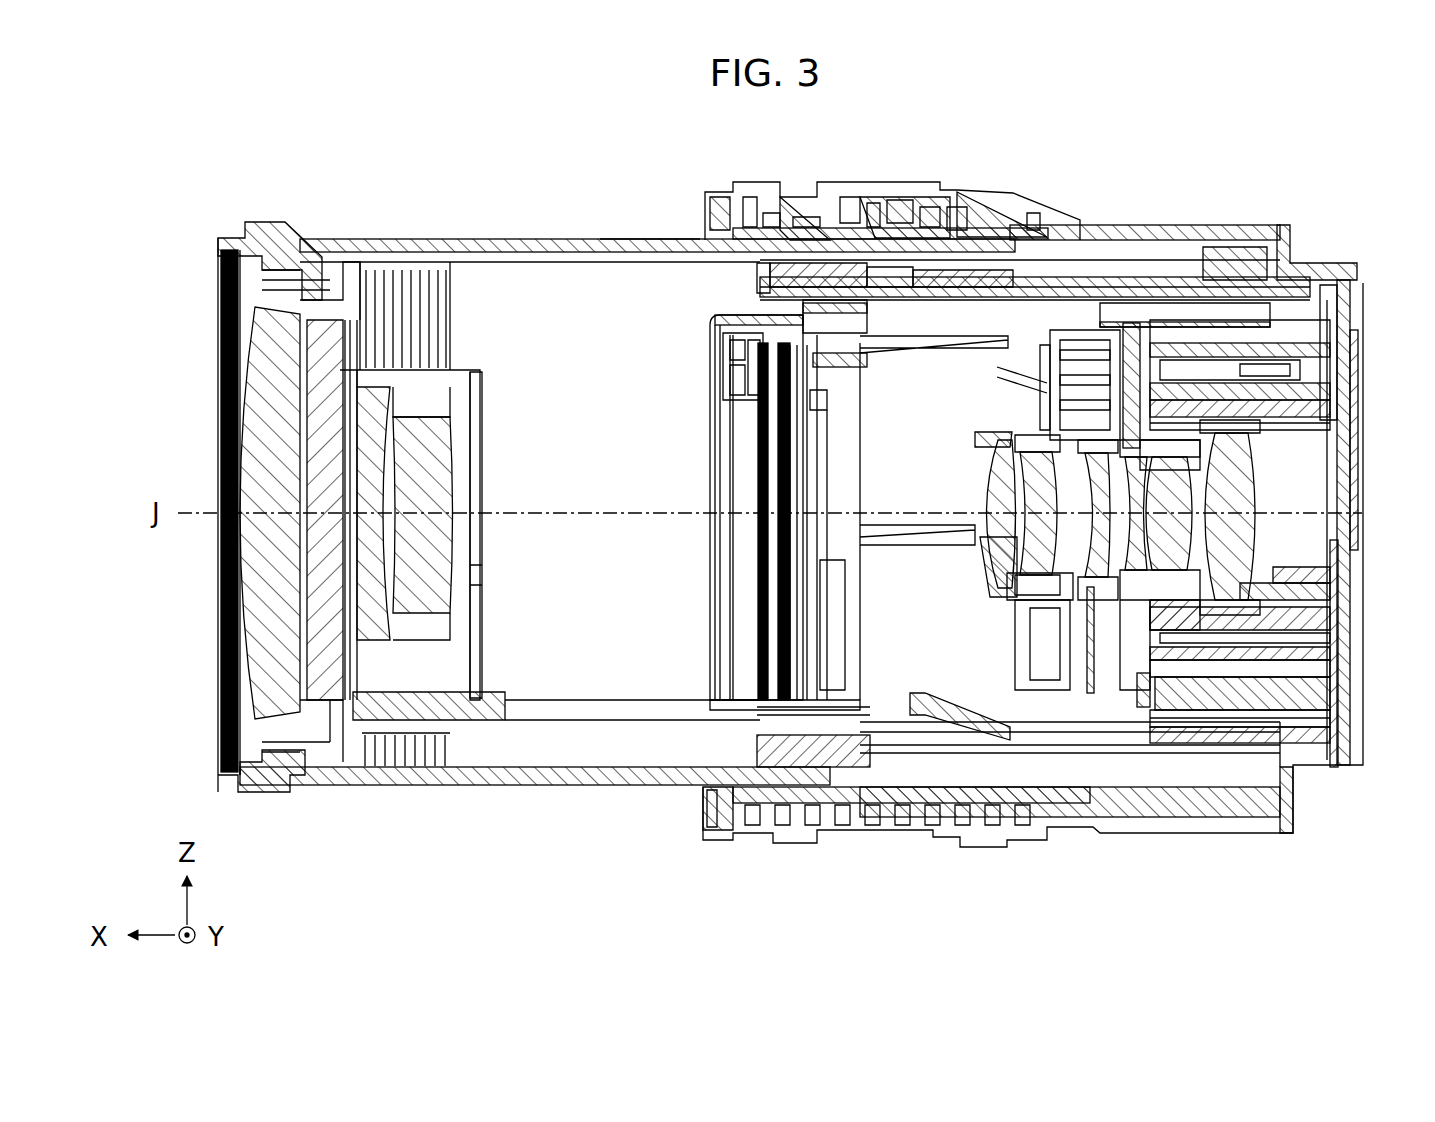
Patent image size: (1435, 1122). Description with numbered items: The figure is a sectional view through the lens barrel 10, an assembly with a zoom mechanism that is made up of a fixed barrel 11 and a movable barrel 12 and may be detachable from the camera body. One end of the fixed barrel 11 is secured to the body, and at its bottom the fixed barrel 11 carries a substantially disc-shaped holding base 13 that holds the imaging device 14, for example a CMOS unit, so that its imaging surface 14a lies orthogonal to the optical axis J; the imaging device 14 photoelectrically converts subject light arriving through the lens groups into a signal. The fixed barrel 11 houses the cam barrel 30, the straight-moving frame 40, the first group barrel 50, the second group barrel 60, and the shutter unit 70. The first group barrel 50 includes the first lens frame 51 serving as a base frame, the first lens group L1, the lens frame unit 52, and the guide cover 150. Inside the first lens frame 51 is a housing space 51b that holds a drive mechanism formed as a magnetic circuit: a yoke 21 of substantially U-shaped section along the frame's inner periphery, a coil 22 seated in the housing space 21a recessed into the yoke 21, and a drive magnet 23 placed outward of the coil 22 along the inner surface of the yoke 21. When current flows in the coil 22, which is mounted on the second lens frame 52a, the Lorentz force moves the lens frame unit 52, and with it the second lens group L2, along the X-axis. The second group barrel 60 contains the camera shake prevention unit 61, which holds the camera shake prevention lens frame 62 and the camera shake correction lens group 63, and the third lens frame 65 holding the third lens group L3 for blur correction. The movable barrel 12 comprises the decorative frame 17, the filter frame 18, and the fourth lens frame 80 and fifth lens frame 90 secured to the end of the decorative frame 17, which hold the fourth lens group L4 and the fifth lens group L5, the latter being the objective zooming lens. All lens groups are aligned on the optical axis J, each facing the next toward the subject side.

The lens barrel 10 is at (1358, 172).
The fixed barrel 11 is at (1166, 225).
The movable barrel 12 is at (645, 236).
The holding base 13 is at (1332, 440).
The imaging device 14 is at (1340, 496).
The imaging surface 14a is at (1332, 530).
The decorative frame 17 is at (572, 240).
The filter frame 18 is at (250, 238).
The yoke 21 is at (1290, 620).
The housing space 21a is at (1228, 630).
The coil 22 is at (1285, 653).
The drive magnet 23 is at (1250, 663).
The cam barrel 30 is at (1122, 282).
The straight-moving frame 40 is at (952, 292).
The first group barrel 50 is at (1224, 335).
The first lens frame 51 is at (1303, 350).
The housing space 51b is at (1250, 680).
The lens frame unit 52 is at (1220, 905).
The second lens frame 52a is at (1150, 632).
The second group barrel 60 is at (993, 432).
The camera shake prevention unit 61 is at (1133, 352).
The camera shake prevention lens frame 62 is at (1104, 600).
The camera shake correction lens group 63 is at (1100, 590).
The third lens frame 65 is at (1062, 678).
The shutter unit 70 is at (715, 312).
The fourth lens frame 80 is at (422, 720).
The fifth lens frame 90 is at (337, 735).
The guide cover 150 is at (1097, 438).
The first lens group L1 is at (1232, 440).
The second lens group L2 is at (1186, 584).
The third lens group L3 is at (1031, 582).
The fourth lens group L4 is at (386, 645).
The fifth lens group L5 is at (278, 735).